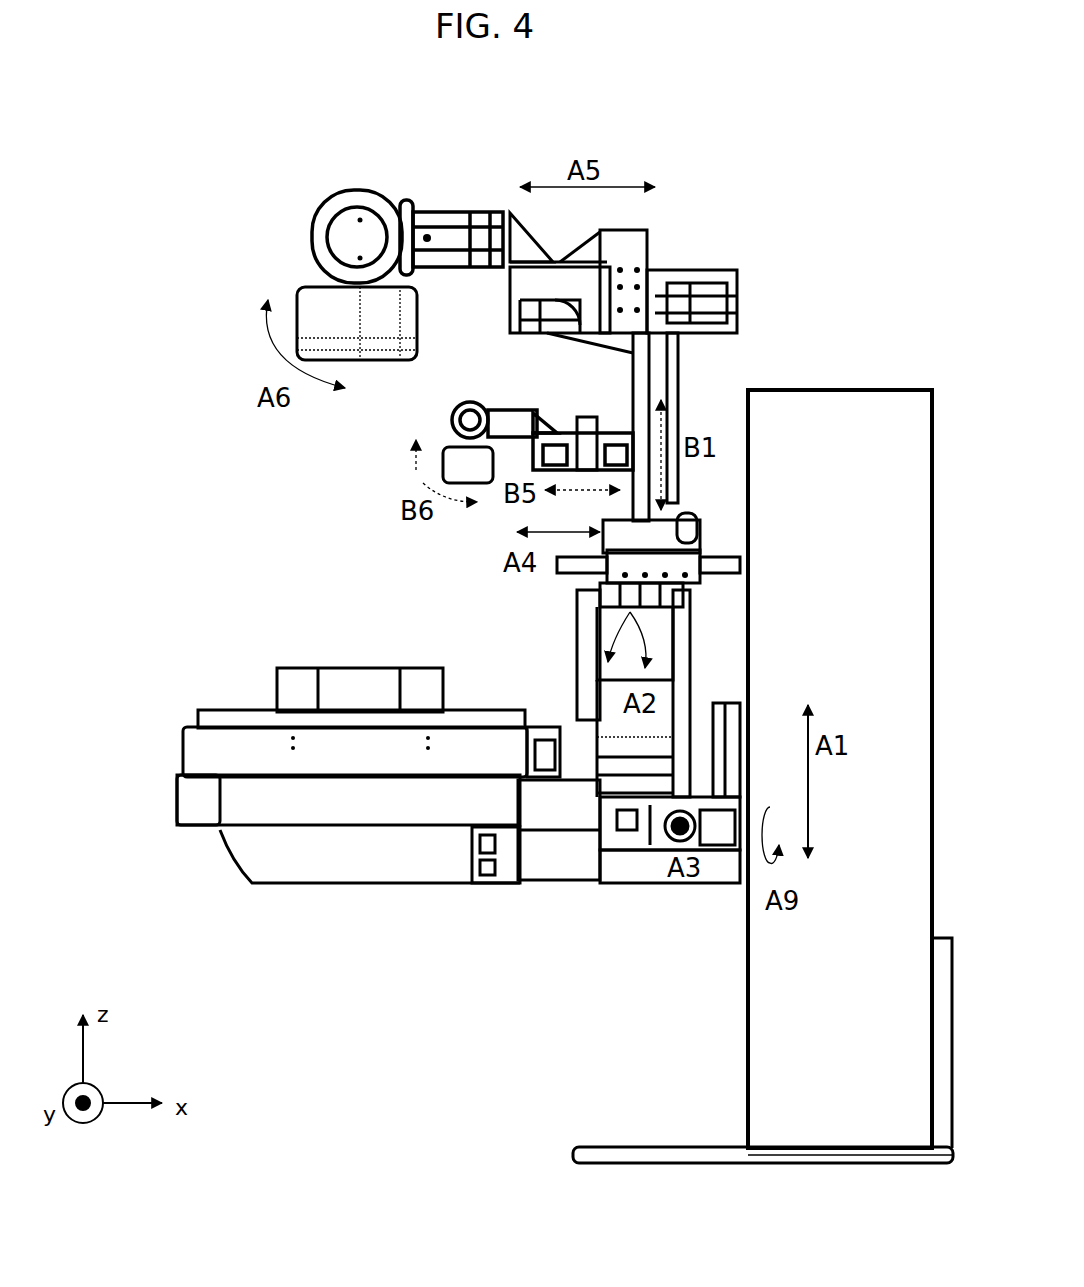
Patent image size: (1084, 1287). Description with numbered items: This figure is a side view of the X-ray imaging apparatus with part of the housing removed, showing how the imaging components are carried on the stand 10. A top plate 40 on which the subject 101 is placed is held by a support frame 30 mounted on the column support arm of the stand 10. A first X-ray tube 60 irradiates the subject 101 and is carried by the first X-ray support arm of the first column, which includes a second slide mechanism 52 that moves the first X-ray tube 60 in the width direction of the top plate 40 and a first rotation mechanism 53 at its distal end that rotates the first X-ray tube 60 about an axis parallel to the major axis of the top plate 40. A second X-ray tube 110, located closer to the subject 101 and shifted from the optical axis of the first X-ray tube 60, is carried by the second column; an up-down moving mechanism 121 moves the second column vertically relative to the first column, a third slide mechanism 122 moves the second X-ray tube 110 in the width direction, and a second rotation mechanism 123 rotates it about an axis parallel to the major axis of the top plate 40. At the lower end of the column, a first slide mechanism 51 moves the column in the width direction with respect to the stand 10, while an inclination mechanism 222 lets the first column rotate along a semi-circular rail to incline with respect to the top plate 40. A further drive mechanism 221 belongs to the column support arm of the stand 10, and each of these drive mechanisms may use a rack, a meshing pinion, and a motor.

The stand 10 is at (897, 402).
The support frame 30 is at (227, 797).
The top plate 40 is at (210, 742).
The first slide mechanism 51 is at (710, 563).
The second slide mechanism 52 is at (650, 247).
The first rotation mechanism 53 is at (312, 226).
The first X-ray tube 60 is at (318, 340).
The subject 101 is at (277, 685).
The second X-ray tube 110 is at (443, 467).
The up-down moving mechanism 121 is at (688, 398).
The third slide mechanism 122 is at (590, 430).
The second rotation mechanism 123 is at (452, 416).
The drive mechanism 221 is at (745, 715).
The inclination mechanism 222 is at (603, 660).